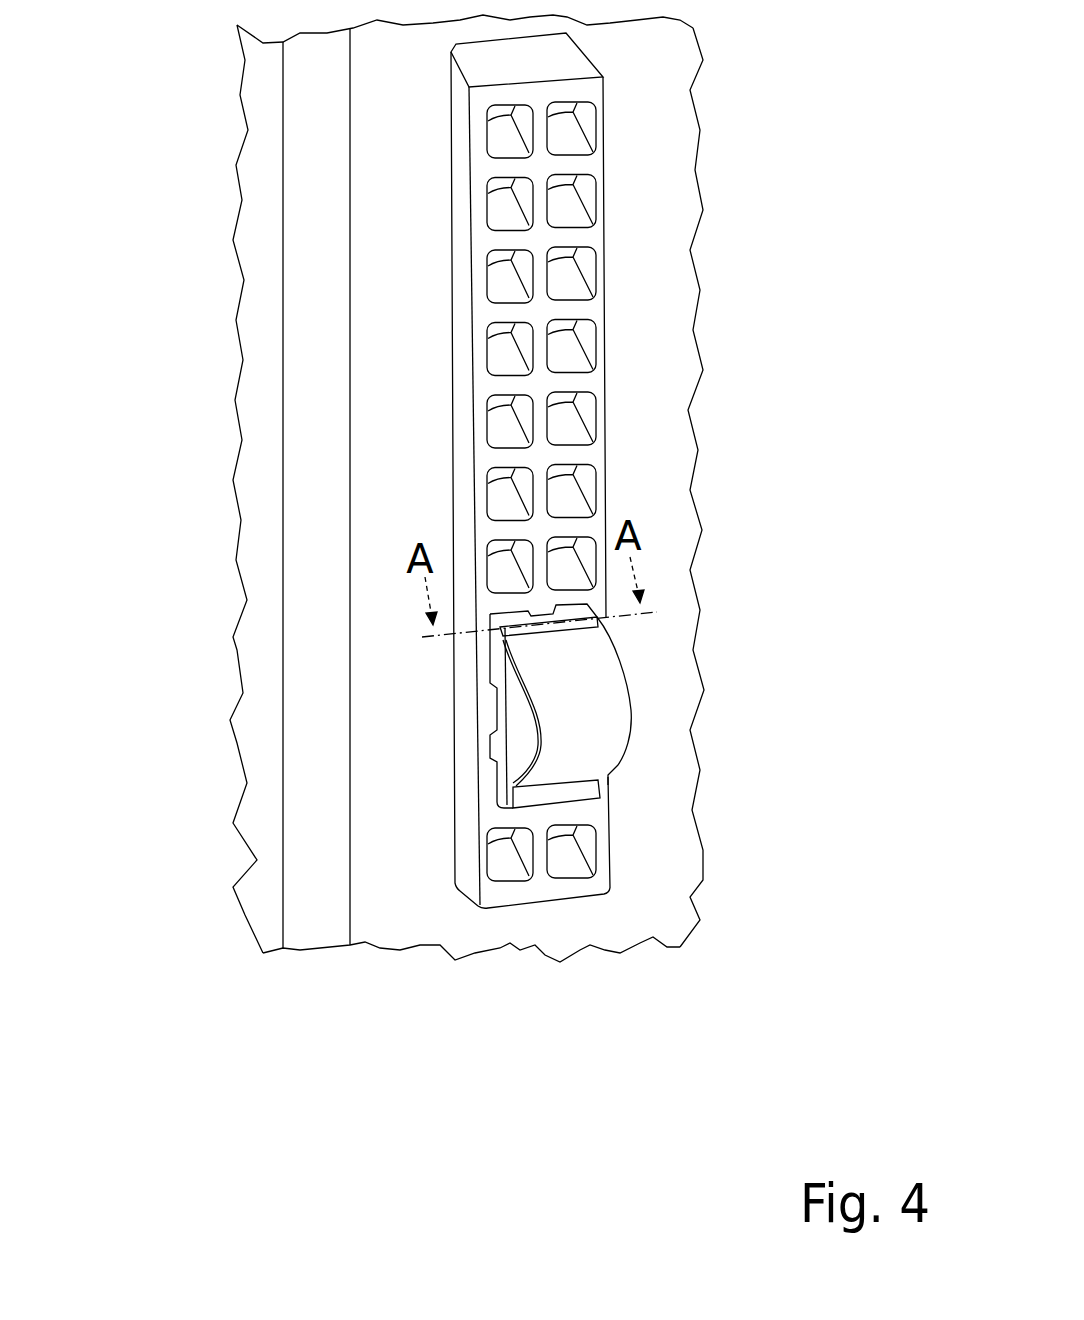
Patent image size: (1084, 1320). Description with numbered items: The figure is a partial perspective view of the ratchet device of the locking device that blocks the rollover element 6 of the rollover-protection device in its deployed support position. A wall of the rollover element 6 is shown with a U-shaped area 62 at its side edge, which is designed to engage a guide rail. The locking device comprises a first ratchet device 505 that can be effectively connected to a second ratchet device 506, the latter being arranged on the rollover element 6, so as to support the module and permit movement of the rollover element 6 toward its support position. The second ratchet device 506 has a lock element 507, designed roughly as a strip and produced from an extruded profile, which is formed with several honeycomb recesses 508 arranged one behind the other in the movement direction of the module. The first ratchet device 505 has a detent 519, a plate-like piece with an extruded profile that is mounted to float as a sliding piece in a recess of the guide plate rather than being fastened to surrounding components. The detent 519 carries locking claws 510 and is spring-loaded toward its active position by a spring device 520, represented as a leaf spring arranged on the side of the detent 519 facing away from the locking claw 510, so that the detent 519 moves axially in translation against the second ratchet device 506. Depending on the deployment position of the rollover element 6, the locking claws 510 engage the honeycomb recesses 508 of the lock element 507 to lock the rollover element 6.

The rollover element 6 is at (410, 947).
The U-shaped area 62 is at (327, 913).
The first ratchet device 505 is at (489, 780).
The second ratchet device 506 is at (522, 910).
The lock element 507 is at (553, 882).
The honeycomb recess 508 is at (567, 847).
The locking claw 510 is at (500, 637).
The detent 519 is at (517, 715).
The spring device 520 is at (542, 650).